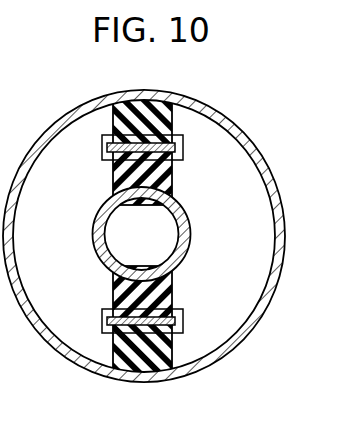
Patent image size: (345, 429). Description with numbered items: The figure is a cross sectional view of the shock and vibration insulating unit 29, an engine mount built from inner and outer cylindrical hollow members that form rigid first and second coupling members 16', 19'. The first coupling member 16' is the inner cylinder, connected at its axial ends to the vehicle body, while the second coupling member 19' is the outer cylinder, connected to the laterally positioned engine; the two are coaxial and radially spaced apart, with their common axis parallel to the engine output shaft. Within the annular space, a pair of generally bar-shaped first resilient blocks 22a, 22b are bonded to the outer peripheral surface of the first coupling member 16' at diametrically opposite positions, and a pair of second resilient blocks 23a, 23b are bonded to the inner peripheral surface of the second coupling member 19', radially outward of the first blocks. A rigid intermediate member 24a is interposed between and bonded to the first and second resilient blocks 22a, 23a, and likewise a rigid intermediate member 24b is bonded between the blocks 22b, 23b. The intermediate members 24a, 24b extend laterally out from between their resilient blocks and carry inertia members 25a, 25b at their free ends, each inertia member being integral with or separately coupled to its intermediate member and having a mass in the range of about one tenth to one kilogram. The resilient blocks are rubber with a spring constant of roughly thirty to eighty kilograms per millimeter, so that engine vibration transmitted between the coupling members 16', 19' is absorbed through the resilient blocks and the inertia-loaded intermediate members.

The first coupling member 16' is at (160, 234).
The second coupling member 19' is at (144, 236).
The shock and vibration insulating unit 29 is at (157, 236).
The first resilient block 22a is at (137, 154).
The first resilient block 22b is at (138, 318).
The second resilient block 23a is at (113, 122).
The second resilient block 23b is at (112, 349).
The intermediate member 24a is at (153, 154).
The intermediate member 24b is at (152, 314).
The inertia member 25a is at (103, 156).
The inertia member 25b is at (103, 314).